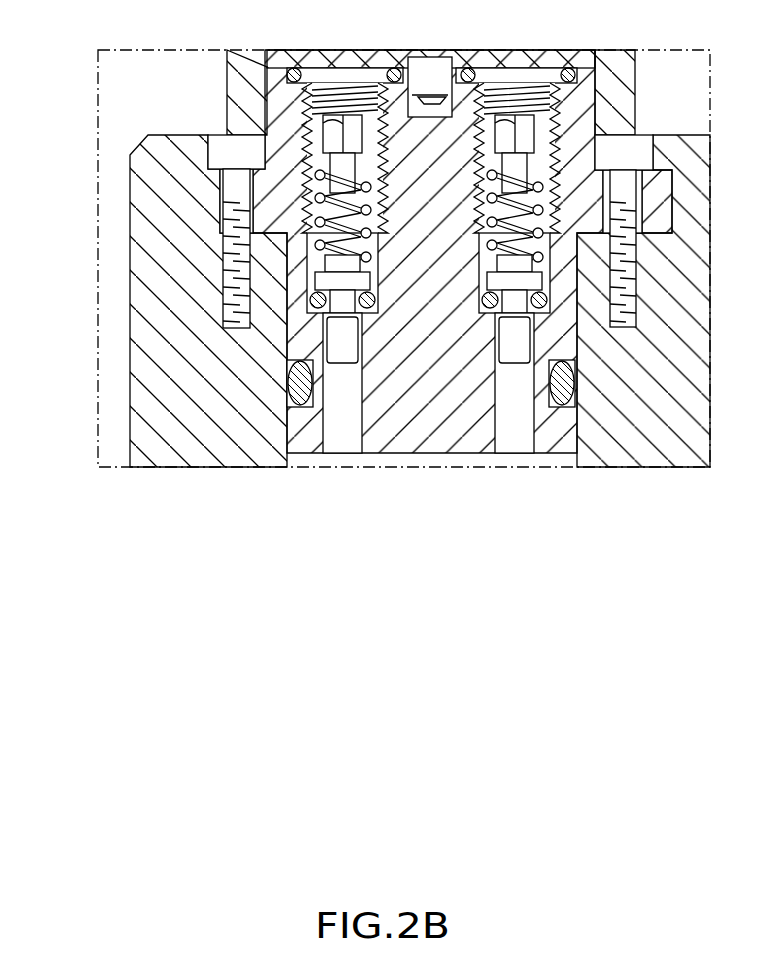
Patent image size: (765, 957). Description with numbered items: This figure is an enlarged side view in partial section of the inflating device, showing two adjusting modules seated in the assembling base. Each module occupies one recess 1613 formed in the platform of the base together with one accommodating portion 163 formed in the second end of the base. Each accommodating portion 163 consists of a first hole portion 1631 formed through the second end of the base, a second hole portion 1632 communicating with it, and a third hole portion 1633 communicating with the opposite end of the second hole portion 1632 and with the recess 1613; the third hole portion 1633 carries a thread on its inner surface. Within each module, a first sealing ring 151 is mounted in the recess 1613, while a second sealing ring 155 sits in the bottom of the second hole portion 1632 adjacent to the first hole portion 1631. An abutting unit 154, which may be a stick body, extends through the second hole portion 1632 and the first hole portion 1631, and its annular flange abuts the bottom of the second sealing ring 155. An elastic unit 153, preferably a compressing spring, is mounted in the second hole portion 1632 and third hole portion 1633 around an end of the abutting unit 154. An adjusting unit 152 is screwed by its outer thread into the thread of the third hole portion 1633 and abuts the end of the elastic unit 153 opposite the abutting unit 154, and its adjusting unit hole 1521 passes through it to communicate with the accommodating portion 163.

The first sealing ring 151 is at (300, 72).
The recess 1613 is at (285, 70).
The adjusting unit hole 1521 is at (312, 110).
The adjusting unit 152 is at (318, 158).
The third hole portion 1633 is at (315, 190).
The elastic unit 153 is at (318, 208).
The accommodating portion 163 is at (307, 247).
The second hole portion 1632 is at (330, 258).
The abutting unit 154 is at (325, 282).
The second sealing ring 155 is at (327, 318).
The first hole portion 1631 is at (322, 425).